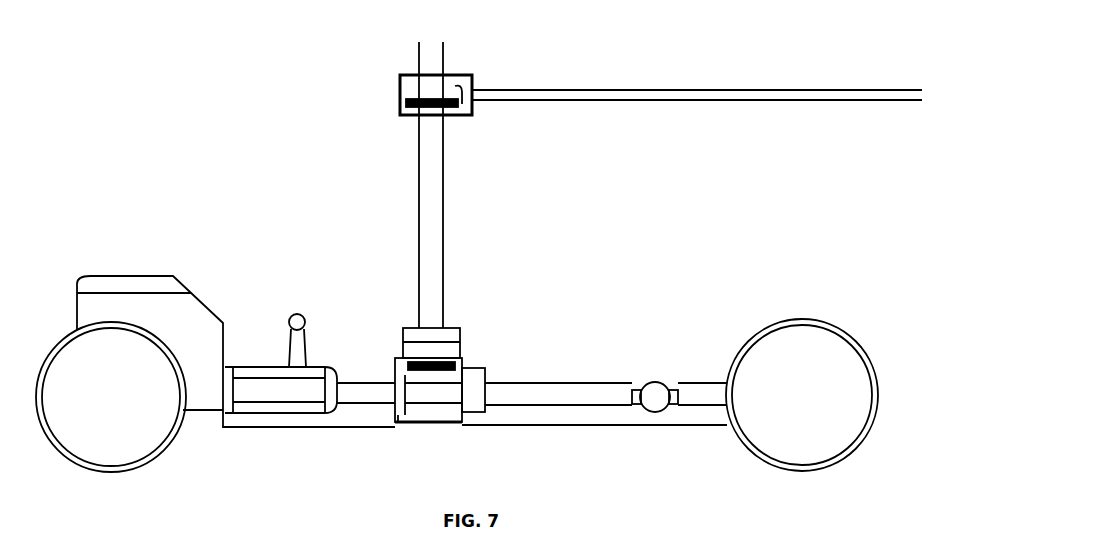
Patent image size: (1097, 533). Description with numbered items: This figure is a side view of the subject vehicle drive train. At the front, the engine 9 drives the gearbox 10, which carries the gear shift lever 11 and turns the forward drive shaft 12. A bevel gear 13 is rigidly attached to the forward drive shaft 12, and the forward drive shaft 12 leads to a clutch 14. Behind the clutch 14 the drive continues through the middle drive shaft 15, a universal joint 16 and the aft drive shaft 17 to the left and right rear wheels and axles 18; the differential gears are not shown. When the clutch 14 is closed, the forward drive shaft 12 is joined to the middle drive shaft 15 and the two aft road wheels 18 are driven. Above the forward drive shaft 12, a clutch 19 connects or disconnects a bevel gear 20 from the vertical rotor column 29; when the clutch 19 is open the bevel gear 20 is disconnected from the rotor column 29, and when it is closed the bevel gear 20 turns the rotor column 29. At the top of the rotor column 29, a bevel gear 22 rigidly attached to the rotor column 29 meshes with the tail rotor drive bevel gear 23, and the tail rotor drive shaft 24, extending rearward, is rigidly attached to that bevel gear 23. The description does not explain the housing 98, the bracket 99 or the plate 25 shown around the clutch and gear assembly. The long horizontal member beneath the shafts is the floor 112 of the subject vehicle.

The engine 9 is at (113, 272).
The gearbox 10 is at (252, 362).
The gear shift lever 11 is at (295, 313).
The forward drive shaft 12 is at (355, 382).
The bevel gear 13 is at (428, 424).
The clutch 14 is at (478, 375).
The middle drive shaft 15 is at (590, 382).
The universal joint 16 is at (655, 382).
The aft drive shaft 17 is at (700, 382).
The rear wheels and axles 18 is at (770, 292).
The clutch 19 is at (460, 330).
The bevel gear 20 is at (447, 428).
The bevel gear 22 is at (405, 98).
The tail rotor drive bevel gear 23 is at (458, 85).
The tail rotor drive shaft 24 is at (640, 88).
The plate 25 is at (462, 345).
The vertical rotor column 29 is at (444, 210).
The upper housing 98 is at (403, 112).
The lower bracket 99 is at (398, 415).
The floor 112 is at (585, 428).